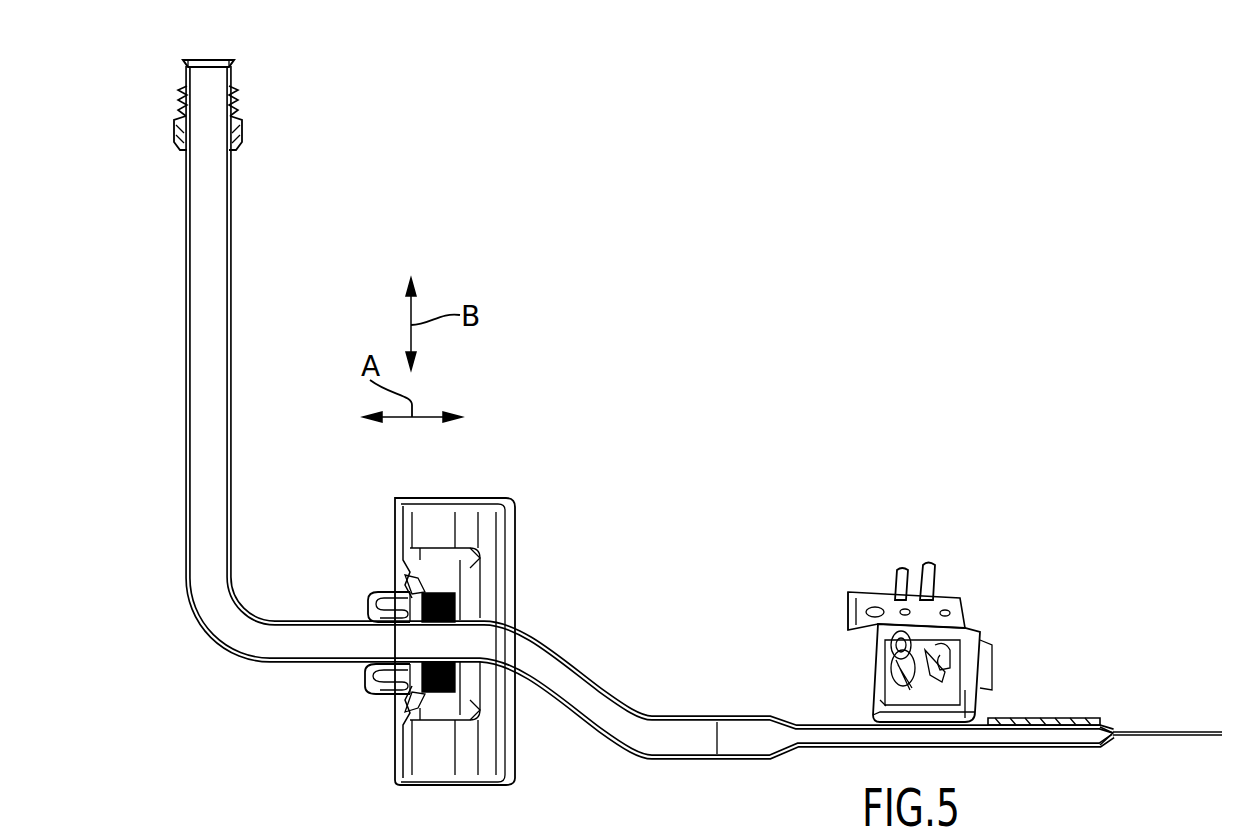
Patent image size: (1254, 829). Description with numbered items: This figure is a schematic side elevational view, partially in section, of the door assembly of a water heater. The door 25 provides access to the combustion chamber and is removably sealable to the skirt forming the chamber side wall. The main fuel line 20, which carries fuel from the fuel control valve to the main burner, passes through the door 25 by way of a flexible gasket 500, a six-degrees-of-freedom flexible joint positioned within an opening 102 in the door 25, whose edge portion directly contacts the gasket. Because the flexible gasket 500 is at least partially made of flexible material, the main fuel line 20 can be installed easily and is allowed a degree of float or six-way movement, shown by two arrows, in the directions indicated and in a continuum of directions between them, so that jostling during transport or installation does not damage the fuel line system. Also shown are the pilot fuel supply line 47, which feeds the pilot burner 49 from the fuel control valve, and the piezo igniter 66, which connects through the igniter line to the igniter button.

The main fuel line 20 is at (230, 327).
The door 25 is at (425, 792).
The flexible gasket 500 is at (365, 580).
The opening 102 is at (395, 700).
The pilot fuel supply line 47 is at (895, 660).
The pilot burner 49 is at (897, 570).
The piezo igniter 66 is at (935, 568).